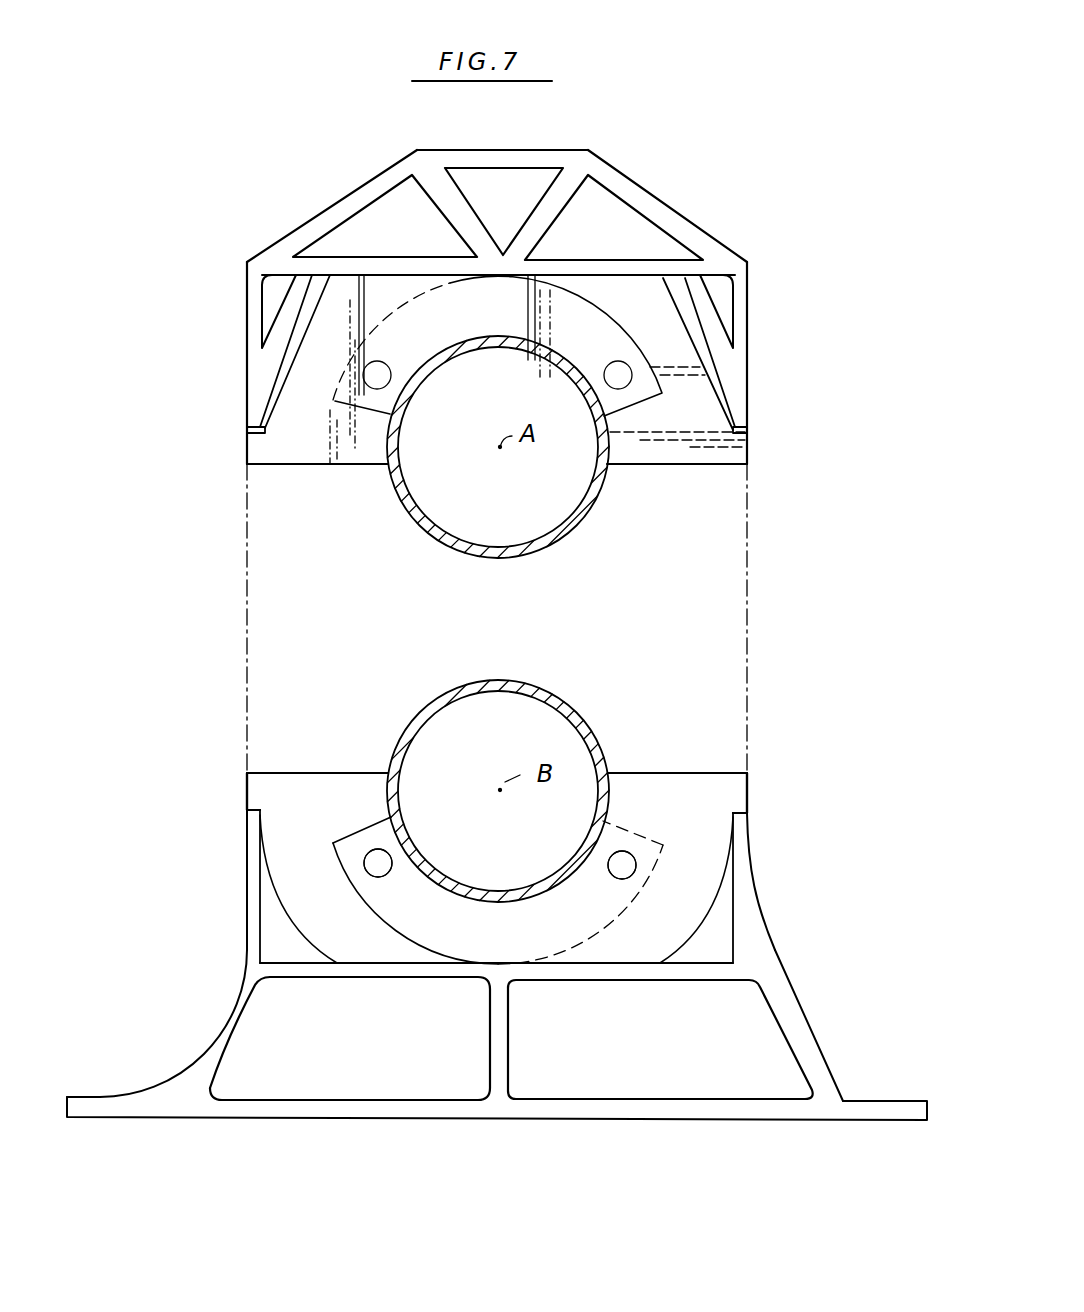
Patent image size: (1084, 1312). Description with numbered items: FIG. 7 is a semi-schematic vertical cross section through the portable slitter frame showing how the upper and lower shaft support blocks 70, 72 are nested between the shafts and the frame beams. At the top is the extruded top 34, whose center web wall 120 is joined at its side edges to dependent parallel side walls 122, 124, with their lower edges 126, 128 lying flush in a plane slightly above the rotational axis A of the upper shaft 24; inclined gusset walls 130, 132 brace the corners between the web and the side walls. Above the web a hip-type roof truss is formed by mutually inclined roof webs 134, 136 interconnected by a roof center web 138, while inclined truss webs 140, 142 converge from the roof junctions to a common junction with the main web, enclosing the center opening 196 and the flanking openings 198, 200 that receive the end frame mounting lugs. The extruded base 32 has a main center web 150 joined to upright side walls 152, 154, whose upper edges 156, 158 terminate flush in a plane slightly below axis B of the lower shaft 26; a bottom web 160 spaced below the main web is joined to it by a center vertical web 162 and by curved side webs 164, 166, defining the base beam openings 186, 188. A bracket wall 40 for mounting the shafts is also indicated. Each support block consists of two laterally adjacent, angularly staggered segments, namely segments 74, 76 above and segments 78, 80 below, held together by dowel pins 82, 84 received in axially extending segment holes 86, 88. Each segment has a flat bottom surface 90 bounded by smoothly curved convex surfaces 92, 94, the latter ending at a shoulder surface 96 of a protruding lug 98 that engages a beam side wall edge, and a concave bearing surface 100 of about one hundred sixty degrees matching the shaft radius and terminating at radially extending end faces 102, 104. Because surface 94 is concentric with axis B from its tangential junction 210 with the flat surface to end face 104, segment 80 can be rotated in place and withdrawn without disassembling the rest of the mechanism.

The upper shaft 24 is at (590, 528).
The lower shaft 26 is at (605, 723).
The base 32 is at (228, 1010).
The top 34 is at (382, 160).
The bracket wall 40 is at (752, 626).
The upper shaft support block 70 is at (244, 480).
The lower shaft support block 72 is at (240, 768).
The segment 74 is at (310, 470).
The segment 76 is at (703, 480).
The segment 78 is at (313, 762).
The segment 80 is at (668, 766).
The dowel pin 82 is at (384, 874).
The dowel pin 84 is at (630, 870).
The segment hole 86 is at (610, 373).
The segment hole 88 is at (386, 373).
The flat bottom surface 90 is at (404, 275).
The convex surface 92 is at (318, 300).
The convex surface 94 is at (395, 932).
The shoulder surface 96 is at (246, 816).
The protruding lug 98 is at (246, 793).
The bearing surface 100 is at (553, 356).
The end face 102 is at (364, 770).
The end face 104 is at (376, 832).
The center web wall 120 is at (487, 281).
The side wall 122 is at (249, 347).
The side wall 124 is at (758, 350).
The lower edge 126 is at (250, 440).
The lower edge 128 is at (750, 441).
The gusset wall 130 is at (264, 302).
The gusset wall 132 is at (732, 302).
The roof web 134 is at (345, 197).
The roof web 136 is at (680, 214).
The roof center web 138 is at (482, 150).
The truss web 140 is at (385, 216).
The truss web 142 is at (614, 217).
The main center web 150 is at (463, 966).
The side wall 152 is at (246, 905).
The side wall 154 is at (764, 905).
The upper edge 156 is at (250, 808).
The upper edge 158 is at (750, 812).
The bottom web 160 is at (458, 1122).
The center vertical web 162 is at (508, 1060).
The curved side web 164 is at (240, 1038).
The curved side web 166 is at (800, 1018).
The base beam opening 186 is at (350, 1038).
The base beam opening 188 is at (660, 1039).
The center opening 196 is at (520, 204).
The opening 198 is at (553, 215).
The opening 200 is at (380, 254).
The tangential junction 210 is at (500, 966).